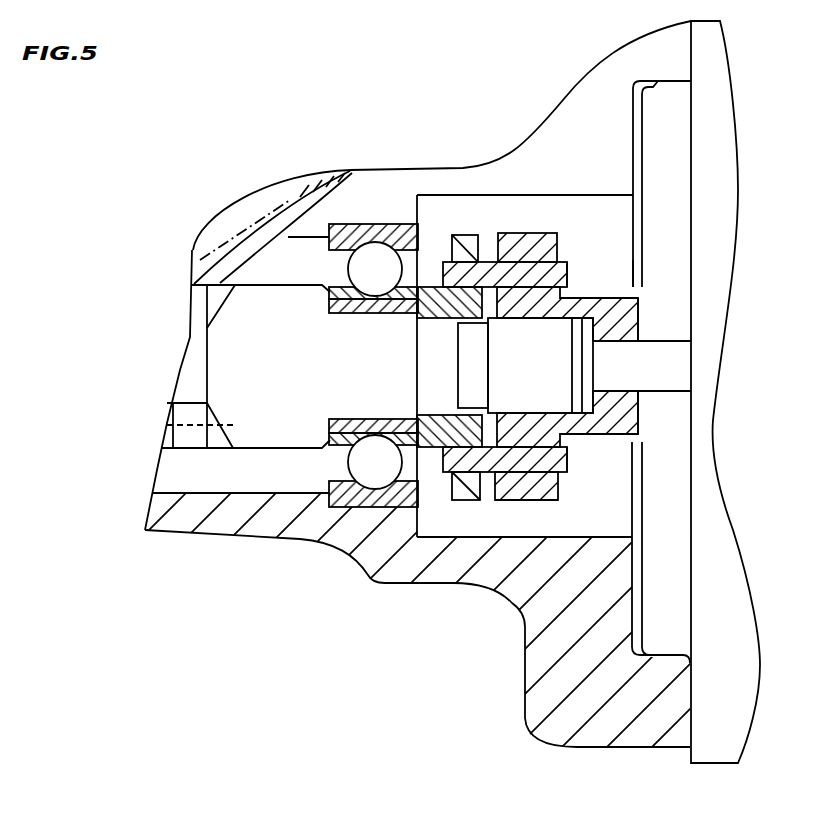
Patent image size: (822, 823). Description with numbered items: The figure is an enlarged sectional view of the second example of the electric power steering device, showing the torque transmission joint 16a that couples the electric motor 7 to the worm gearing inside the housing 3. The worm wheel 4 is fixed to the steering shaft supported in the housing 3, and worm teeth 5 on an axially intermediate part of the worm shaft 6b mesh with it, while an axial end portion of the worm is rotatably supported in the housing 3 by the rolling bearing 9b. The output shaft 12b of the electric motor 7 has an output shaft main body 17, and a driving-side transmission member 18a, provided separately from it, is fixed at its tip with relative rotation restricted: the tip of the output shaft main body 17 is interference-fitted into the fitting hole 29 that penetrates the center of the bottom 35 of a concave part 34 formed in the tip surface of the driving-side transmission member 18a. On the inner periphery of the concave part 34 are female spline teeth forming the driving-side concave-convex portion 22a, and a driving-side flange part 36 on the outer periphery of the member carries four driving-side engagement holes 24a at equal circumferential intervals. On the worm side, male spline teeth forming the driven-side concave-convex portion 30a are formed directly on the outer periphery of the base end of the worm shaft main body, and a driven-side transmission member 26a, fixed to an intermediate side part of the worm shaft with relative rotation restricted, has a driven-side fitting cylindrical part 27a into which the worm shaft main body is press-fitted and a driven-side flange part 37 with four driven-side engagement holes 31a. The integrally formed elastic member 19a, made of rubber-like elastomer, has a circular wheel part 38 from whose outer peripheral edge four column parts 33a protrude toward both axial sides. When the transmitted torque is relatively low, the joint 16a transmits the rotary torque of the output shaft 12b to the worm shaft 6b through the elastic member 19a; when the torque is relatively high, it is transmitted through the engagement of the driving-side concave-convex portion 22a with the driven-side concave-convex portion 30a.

The housing 3 is at (160, 525).
The worm wheel 4 is at (197, 253).
The worm teeth 5 is at (163, 437).
The worm shaft 6b is at (247, 428).
The electric motor 7 is at (723, 173).
The rolling bearing 9b is at (373, 467).
The output shaft 12b is at (682, 374).
The torque transmission joint 16a is at (578, 528).
The output shaft main body 17 is at (660, 378).
The driving-side transmission member 18a is at (625, 312).
The elastic member 19a is at (560, 240).
The driving-side concave-convex portion 22a is at (528, 326).
The driving-side engagement hole 24a is at (503, 275).
The driven-side transmission member 26a is at (412, 497).
The driven-side fitting cylindrical part 27a is at (433, 308).
The fitting hole 29 is at (618, 345).
The driven-side concave-convex portion 30a is at (520, 433).
The driven-side engagement hole 31a is at (445, 295).
The column part 33a is at (573, 270).
The concave part 34 is at (630, 268).
The bottom 35 is at (622, 326).
The driving-side flange part 36 is at (540, 500).
The driven-side flange part 37 is at (468, 490).
The circular wheel part 38 is at (458, 322).